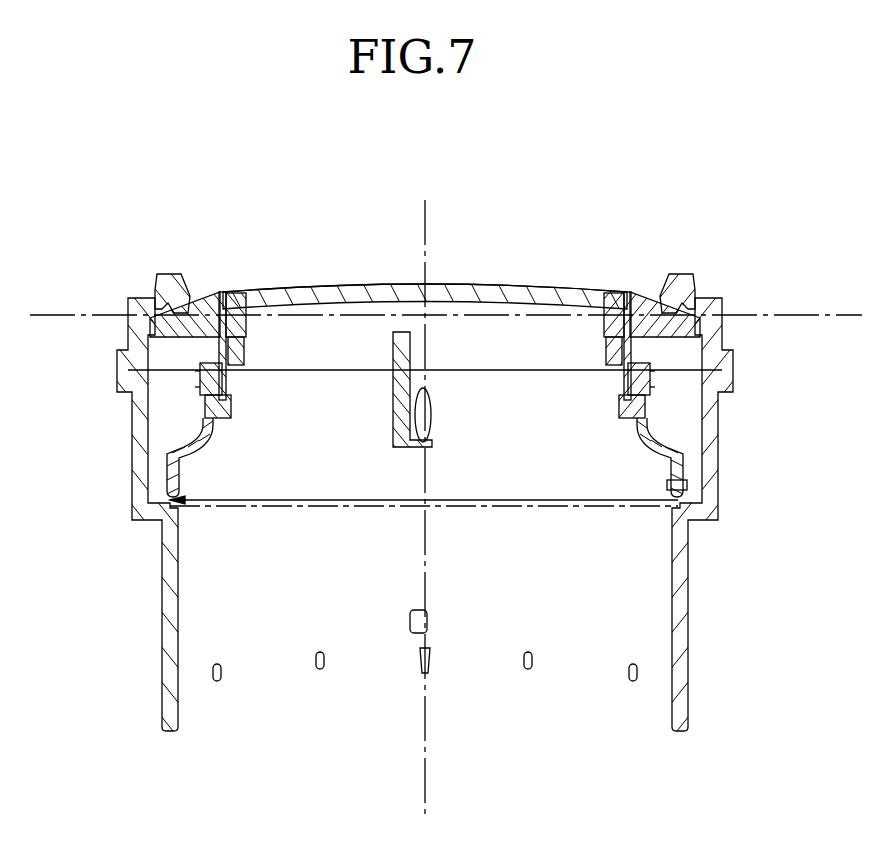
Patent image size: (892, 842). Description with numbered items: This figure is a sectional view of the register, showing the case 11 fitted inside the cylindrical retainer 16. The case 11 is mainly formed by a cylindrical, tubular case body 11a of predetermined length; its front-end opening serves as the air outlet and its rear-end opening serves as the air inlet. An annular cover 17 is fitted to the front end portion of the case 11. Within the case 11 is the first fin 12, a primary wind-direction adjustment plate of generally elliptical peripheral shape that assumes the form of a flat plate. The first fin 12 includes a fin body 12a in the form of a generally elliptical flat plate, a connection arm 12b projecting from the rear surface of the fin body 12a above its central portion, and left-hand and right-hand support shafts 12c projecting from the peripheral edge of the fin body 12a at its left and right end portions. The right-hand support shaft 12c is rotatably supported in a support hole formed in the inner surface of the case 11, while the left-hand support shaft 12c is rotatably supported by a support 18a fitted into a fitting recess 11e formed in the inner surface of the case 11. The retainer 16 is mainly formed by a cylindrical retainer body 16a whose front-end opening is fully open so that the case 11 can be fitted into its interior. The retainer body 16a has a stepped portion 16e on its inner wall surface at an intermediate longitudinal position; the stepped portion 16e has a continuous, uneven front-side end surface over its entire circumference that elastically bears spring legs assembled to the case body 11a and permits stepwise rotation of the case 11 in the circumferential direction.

The case 11 is at (672, 432).
The case body 11a is at (188, 448).
The fitting recess 11e is at (222, 360).
The first fin 12 is at (352, 282).
The fin body 12a is at (494, 288).
The connection arm 12b is at (400, 388).
The support shaft 12c is at (205, 375).
The retainer 16 is at (130, 524).
The retainer body 16a is at (170, 621).
The stepped portion 16e is at (504, 490).
The cover 17 is at (700, 293).
The support 18a is at (222, 403).